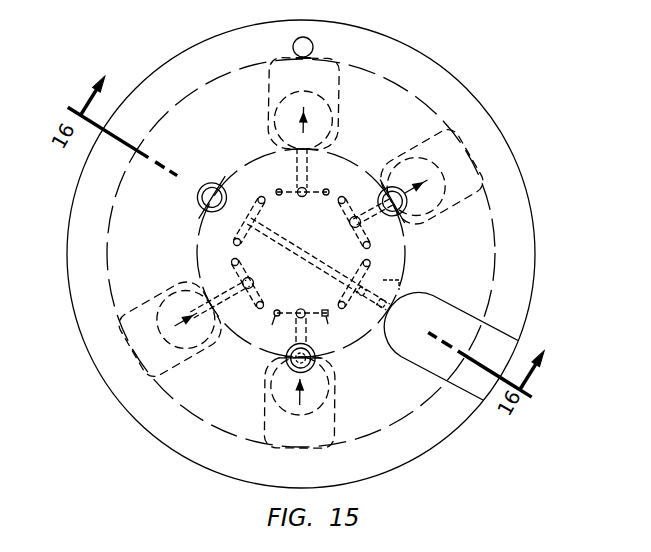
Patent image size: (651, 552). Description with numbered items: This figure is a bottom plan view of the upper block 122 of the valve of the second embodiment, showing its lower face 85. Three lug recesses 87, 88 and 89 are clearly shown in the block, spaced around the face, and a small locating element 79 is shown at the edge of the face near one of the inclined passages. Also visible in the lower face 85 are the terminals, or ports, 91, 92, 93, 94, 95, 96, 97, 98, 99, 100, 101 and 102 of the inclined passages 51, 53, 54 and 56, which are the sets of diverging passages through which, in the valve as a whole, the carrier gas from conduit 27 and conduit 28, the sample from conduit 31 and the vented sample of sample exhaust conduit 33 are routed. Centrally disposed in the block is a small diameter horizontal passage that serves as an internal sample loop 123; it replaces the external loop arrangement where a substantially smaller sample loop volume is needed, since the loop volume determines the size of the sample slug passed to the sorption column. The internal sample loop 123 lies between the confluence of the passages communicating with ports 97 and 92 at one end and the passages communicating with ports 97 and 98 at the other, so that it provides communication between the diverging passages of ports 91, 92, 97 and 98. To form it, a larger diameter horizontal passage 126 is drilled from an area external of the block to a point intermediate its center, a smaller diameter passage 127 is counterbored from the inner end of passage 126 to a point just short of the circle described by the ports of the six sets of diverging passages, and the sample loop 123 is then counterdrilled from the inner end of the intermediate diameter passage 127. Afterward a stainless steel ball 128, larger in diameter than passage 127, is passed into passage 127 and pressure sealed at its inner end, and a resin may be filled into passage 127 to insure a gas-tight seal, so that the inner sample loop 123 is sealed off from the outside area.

The conduit 27 is at (304, 387).
The conduit 28 is at (184, 322).
The conduit 31 is at (420, 191).
The sample exhaust conduit 33 is at (306, 118).
The inclined passage 51 is at (324, 360).
The inclined passage 53 is at (480, 170).
The inclined passage 54 is at (288, 77).
The inclined passage 56 is at (124, 321).
The locating pin 79 is at (309, 41).
The lower face 85 is at (393, 386).
The lug recess 87 is at (296, 372).
The lug recess 88 is at (198, 201).
The lug recess 89 is at (388, 187).
The port 91 is at (345, 308).
The port 92 is at (370, 264).
The port 93 is at (371, 245).
The port 94 is at (344, 197).
The port 95 is at (328, 190).
The port 96 is at (279, 189).
The port 97 is at (260, 197).
The port 98 is at (235, 241).
The port 99 is at (232, 261).
The port 100 is at (262, 309).
The port 101 is at (276, 316).
The port 102 is at (326, 316).
The upper block 122 is at (74, 320).
The internal sample loop 123 is at (330, 266).
The horizontal passage 126 is at (473, 395).
The horizontal passage 127 is at (401, 284).
The metal ball 128 is at (391, 309).